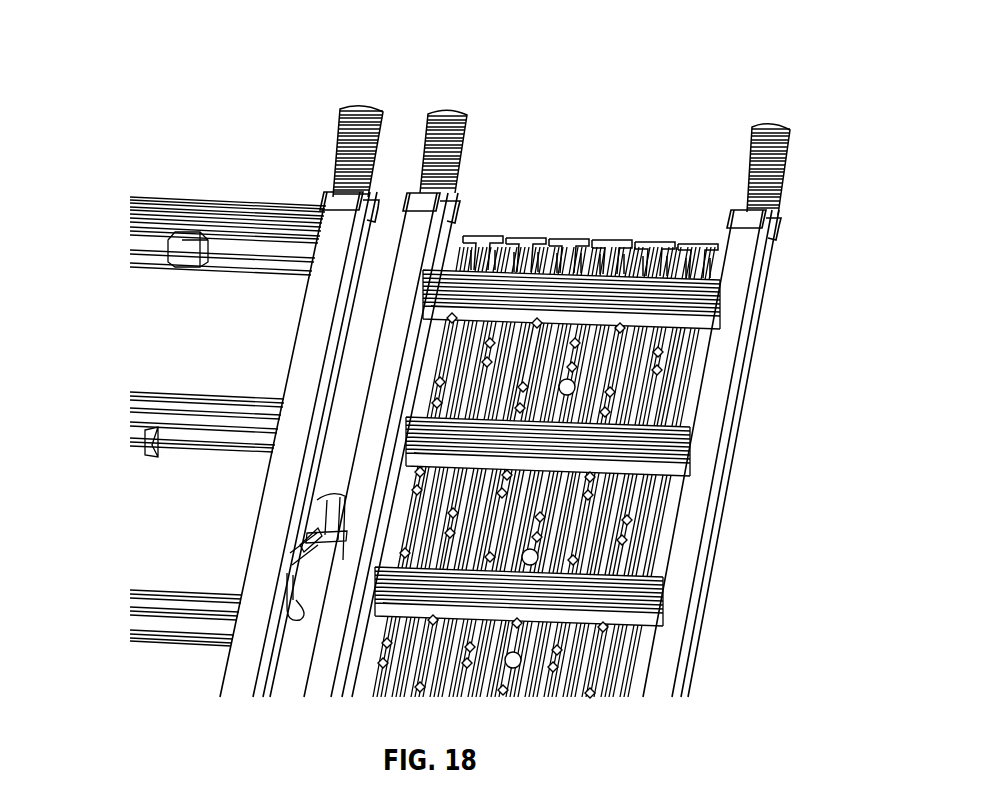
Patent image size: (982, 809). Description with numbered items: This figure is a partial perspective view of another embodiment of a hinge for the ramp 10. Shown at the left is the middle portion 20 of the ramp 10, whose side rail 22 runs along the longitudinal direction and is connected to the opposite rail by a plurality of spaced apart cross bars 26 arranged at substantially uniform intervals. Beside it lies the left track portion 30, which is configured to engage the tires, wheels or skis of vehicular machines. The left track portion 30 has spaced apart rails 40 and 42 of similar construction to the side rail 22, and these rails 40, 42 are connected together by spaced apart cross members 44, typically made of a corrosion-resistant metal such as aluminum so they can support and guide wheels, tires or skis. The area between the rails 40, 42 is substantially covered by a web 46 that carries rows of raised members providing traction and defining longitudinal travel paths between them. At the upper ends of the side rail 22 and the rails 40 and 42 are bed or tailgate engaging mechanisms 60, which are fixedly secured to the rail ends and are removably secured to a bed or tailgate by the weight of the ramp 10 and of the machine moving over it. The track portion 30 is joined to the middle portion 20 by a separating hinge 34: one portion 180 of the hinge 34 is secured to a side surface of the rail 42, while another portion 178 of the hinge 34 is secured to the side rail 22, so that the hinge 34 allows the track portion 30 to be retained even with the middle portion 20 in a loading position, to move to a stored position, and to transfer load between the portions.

The ramp 10 is at (132, 312).
The middle portion 20 is at (209, 193).
The side rail 22 is at (330, 245).
The cross bar 26 is at (255, 240).
The left track portion 30 is at (570, 230).
The hinge 34 is at (294, 533).
The rail 40 is at (740, 270).
The rail 42 is at (457, 198).
The cross member 44 is at (670, 313).
The web 46 is at (657, 377).
The bed or tailgate engaging mechanism 60 is at (350, 105).
The hinge portion 178 is at (300, 620).
The hinge portion 180 is at (327, 517).